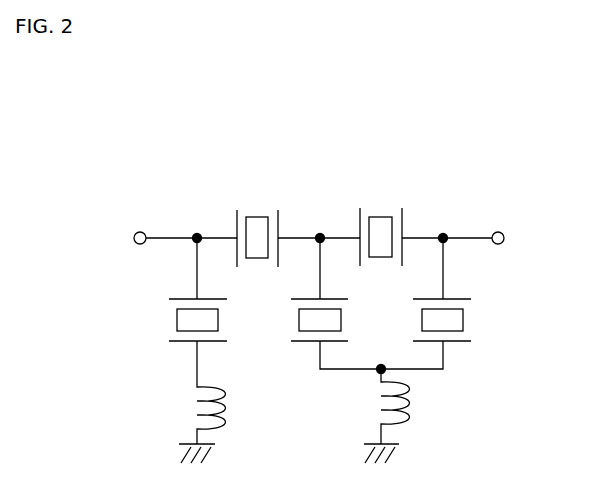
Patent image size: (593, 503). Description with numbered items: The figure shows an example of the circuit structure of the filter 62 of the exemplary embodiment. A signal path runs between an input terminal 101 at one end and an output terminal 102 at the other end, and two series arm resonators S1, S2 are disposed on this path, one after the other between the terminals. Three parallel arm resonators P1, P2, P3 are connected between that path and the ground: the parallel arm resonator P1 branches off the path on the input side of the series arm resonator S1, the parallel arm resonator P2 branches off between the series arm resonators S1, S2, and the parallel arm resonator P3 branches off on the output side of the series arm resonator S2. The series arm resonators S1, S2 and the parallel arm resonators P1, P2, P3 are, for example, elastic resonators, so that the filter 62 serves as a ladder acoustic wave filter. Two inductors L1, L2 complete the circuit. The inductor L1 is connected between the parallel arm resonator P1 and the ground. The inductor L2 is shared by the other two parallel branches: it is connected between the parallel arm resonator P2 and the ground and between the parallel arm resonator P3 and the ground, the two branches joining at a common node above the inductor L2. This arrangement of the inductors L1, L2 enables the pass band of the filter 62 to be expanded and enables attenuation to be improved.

The filter 62 is at (472, 182).
The input terminal 101 is at (163, 220).
The output terminal 102 is at (505, 231).
The series arm resonator S1 is at (251, 216).
The series arm resonator S2 is at (381, 216).
The parallel arm resonator P1 is at (175, 323).
The parallel arm resonator P2 is at (297, 323).
The parallel arm resonator P3 is at (419, 323).
The inductor L1 is at (191, 403).
The inductor L2 is at (374, 402).